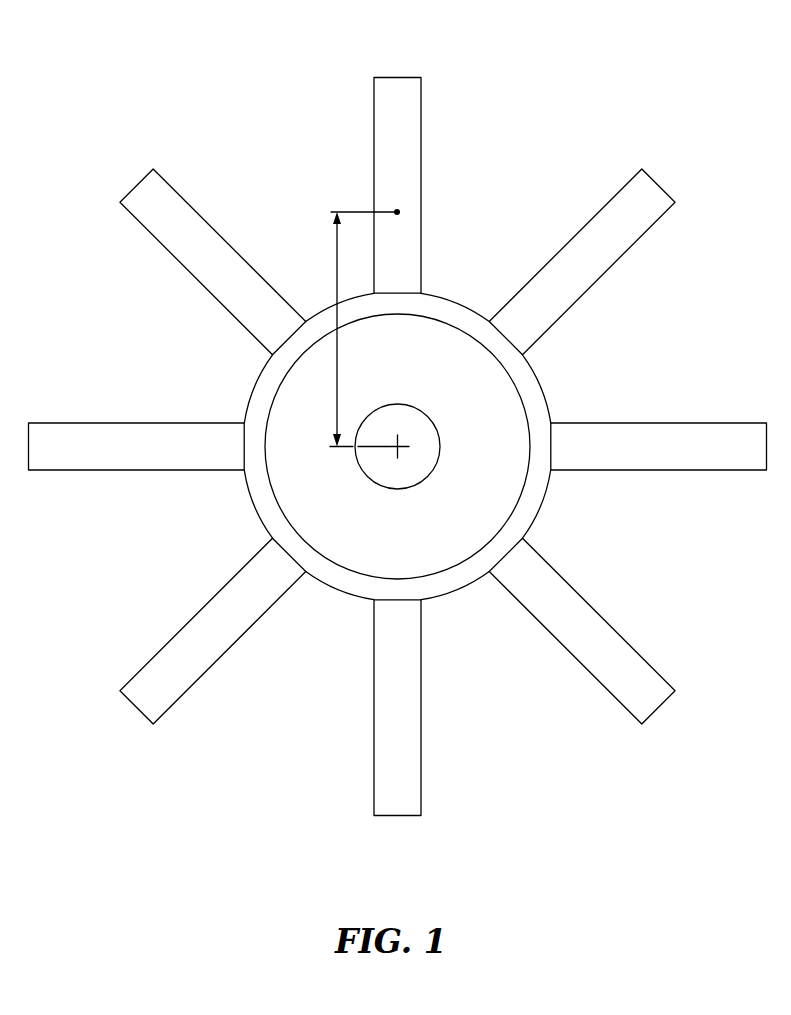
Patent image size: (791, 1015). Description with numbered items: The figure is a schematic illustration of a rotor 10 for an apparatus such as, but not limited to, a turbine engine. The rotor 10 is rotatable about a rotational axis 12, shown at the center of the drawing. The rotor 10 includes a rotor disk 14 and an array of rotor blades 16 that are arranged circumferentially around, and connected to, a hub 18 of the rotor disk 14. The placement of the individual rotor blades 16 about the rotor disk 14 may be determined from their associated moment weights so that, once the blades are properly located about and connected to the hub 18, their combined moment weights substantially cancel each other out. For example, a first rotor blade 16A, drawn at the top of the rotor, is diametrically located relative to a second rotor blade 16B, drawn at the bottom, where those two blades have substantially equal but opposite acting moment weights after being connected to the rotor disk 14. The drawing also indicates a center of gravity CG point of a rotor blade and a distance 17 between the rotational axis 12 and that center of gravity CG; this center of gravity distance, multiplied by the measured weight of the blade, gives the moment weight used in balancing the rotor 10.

The rotor 10 is at (630, 70).
The rotational axis 12 is at (397, 447).
The rotor disk 14 is at (558, 380).
The rotor blades 16 is at (598, 200).
The first rotor blade 16A is at (373, 102).
The second rotor blade 16B is at (373, 777).
The distance 17 is at (361, 329).
The hub 18 is at (541, 498).
The center of gravity CG is at (396, 210).